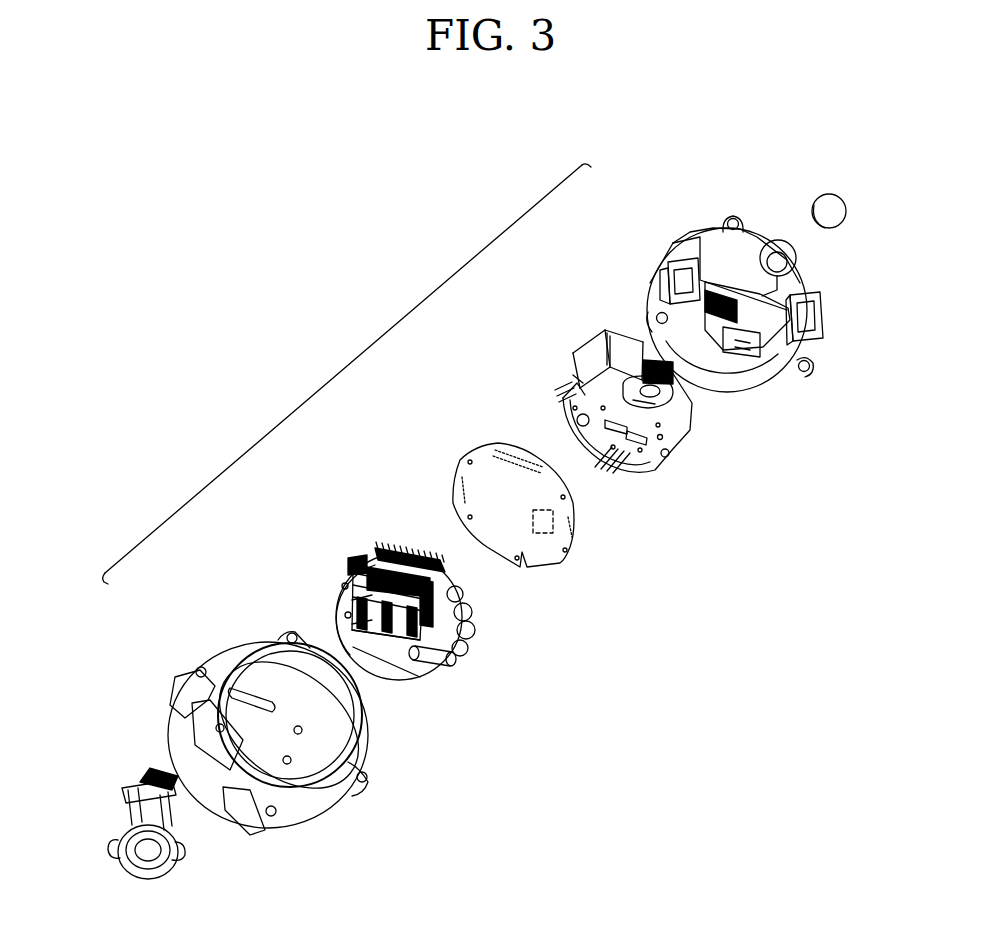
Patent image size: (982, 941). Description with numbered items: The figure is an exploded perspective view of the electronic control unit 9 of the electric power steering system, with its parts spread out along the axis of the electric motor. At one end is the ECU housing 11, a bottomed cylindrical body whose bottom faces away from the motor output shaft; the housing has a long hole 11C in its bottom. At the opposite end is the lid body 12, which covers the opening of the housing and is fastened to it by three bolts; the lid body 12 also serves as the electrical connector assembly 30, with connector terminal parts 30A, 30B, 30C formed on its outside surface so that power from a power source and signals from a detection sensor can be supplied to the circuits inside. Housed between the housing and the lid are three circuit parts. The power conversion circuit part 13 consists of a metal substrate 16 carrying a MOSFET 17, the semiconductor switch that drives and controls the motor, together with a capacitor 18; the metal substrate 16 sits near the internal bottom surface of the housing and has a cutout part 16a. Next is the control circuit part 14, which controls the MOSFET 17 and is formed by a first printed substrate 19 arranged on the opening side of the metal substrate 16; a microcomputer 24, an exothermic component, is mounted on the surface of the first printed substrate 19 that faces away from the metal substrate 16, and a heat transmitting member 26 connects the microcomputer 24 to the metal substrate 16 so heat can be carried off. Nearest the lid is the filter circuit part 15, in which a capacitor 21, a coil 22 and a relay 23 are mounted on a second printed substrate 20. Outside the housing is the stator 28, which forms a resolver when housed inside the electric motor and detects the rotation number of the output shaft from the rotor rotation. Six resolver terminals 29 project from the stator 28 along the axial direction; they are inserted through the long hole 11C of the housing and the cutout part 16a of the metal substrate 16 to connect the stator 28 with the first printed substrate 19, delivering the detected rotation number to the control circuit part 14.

The electronic control unit 9 is at (339, 368).
The ECU housing 11 is at (255, 702).
The long hole 11C is at (240, 688).
The lid body 12 is at (734, 306).
The power conversion circuit part 13 is at (393, 571).
The control circuit part 14 is at (511, 468).
The filter circuit part 15 is at (612, 366).
The metal substrate 16 is at (387, 564).
The cutout part 16a is at (378, 550).
The MOSFET 17 is at (348, 594).
The capacitor 18 is at (466, 600).
The first printed substrate 19 is at (486, 450).
The second printed substrate 20 is at (566, 394).
The capacitor 21 is at (690, 428).
The coil 22 is at (680, 388).
The relay 23 is at (622, 345).
The microcomputer 24 is at (562, 524).
The heat transmitting member 26 is at (462, 630).
The stator 28 is at (113, 862).
The resolver terminals 29 is at (148, 785).
The electrical connector assembly 30 is at (829, 211).
The connector terminal part 30A is at (772, 345).
The connector terminal part 30B is at (823, 316).
The connector terminal part 30C is at (680, 275).